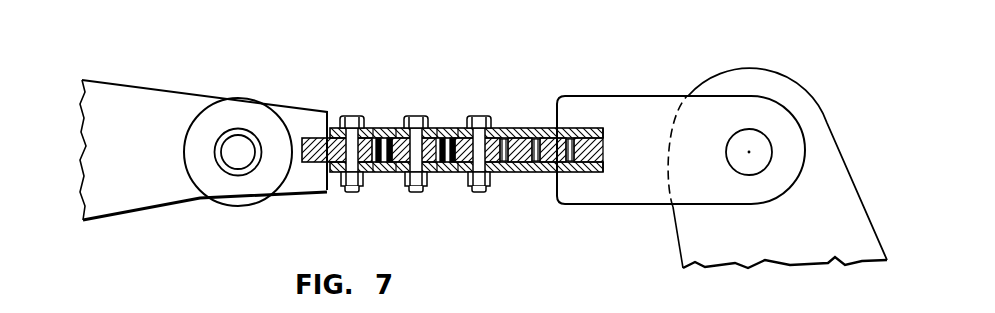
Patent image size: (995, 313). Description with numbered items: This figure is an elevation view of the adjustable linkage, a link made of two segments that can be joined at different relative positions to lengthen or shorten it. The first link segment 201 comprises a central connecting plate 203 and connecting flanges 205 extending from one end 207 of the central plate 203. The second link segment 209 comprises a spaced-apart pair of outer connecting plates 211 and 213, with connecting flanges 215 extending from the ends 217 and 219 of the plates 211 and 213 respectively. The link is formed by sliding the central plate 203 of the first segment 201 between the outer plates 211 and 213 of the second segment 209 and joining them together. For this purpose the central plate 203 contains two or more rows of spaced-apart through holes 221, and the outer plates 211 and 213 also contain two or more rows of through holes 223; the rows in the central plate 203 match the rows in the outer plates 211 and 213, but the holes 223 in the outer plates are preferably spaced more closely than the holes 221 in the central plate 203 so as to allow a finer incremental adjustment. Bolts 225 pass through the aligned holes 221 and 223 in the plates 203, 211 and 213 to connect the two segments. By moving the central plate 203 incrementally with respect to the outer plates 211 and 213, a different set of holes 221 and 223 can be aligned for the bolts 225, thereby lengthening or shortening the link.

The first link segment 201 is at (280, 98).
The central connecting plate 203 is at (315, 164).
The connecting flanges 205 is at (229, 98).
The end of plate 207 is at (300, 156).
The second link segment 209 is at (645, 73).
The outer connecting plate 211 is at (527, 128).
The outer connecting plate 213 is at (533, 173).
The connecting flanges 215 is at (663, 95).
The end of outer plate 217 is at (605, 128).
The end of outer plate 219 is at (604, 164).
The through holes 221 is at (387, 173).
The through holes 223 is at (394, 128).
The bolts 225 is at (488, 117).